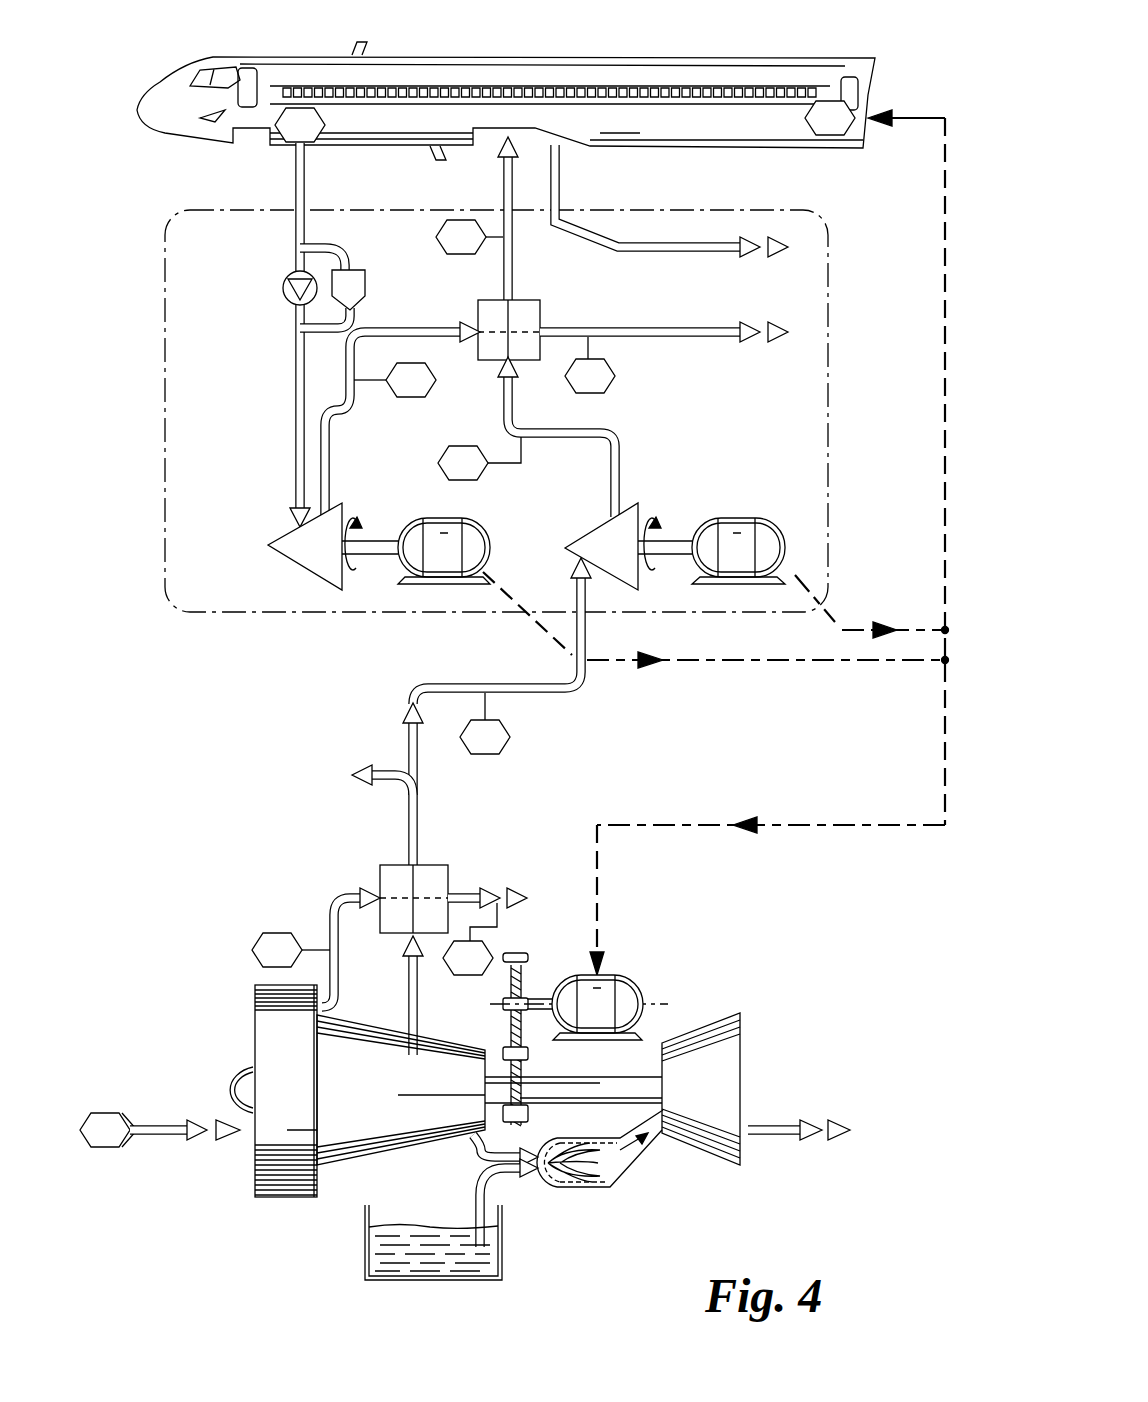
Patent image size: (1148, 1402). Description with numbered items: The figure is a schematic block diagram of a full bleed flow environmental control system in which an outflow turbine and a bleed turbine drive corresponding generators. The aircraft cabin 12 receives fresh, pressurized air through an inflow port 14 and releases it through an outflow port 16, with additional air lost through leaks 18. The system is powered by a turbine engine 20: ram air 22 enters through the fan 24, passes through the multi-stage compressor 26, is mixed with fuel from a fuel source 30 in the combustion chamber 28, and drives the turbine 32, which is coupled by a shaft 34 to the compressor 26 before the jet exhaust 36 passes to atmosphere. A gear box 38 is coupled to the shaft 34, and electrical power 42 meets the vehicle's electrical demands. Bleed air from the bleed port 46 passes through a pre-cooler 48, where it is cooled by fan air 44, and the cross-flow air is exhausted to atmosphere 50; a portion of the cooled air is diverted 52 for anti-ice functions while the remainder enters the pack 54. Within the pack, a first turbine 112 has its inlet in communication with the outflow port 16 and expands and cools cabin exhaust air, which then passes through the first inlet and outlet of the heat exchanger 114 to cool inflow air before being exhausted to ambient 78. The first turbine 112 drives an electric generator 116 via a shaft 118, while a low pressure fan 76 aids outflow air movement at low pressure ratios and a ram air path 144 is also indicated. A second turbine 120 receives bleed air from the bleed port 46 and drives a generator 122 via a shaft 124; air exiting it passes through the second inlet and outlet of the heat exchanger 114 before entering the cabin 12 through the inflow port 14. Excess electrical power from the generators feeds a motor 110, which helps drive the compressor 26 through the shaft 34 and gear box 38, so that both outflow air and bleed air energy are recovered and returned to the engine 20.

The cabin 12 is at (383, 55).
The inflow port 14 is at (492, 150).
The outflow port 16 is at (280, 155).
The leaks 18 is at (708, 243).
The turbine engine 20 is at (205, 965).
The ram air 22 is at (170, 1125).
The fan 24 is at (275, 1200).
The multi-stage compressor 26 is at (336, 1170).
The combustion chamber 28 is at (630, 1165).
The fuel source 30 is at (503, 1248).
The turbine 32 is at (697, 1030).
The shaft 34 is at (577, 1075).
The jet exhaust 36 is at (770, 1127).
The gear box 38 is at (545, 968).
The electrical power 42 is at (940, 727).
The fan air 44 is at (330, 925).
The bleed port 46 is at (402, 1035).
The pre-cooler 48 is at (436, 863).
The cross-flow air exhaust 50 is at (470, 893).
The diverted anti-ice air 52 is at (388, 782).
The pack 54 is at (162, 540).
The low pressure fan 76 is at (368, 283).
The exhaust to ambient 78 is at (700, 338).
The motor 110 is at (612, 973).
The first turbine 112 is at (302, 566).
The heat exchanger 114 is at (490, 362).
The electric generator 116 is at (490, 545).
The shaft 118 is at (383, 540).
The second turbine 120 is at (592, 530).
The generator 122 is at (788, 555).
The shaft 124 is at (652, 537).
The ram air path 144 is at (272, 393).